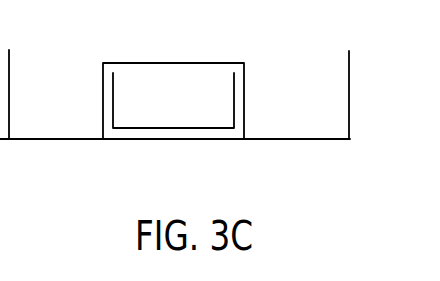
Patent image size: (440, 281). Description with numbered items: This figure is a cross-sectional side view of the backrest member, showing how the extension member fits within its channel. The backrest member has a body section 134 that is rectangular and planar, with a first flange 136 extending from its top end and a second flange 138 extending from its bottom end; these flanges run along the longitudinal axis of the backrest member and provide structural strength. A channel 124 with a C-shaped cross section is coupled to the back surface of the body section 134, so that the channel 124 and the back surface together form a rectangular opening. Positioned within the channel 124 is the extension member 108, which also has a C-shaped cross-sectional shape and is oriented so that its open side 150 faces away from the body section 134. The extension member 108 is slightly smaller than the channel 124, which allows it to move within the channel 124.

The extension member 108 is at (197, 128).
The channel 124 is at (245, 102).
The body section 134 is at (67, 139).
The first flange 136 is at (348, 69).
The second flange 138 is at (10, 62).
The open side 150 is at (190, 85).